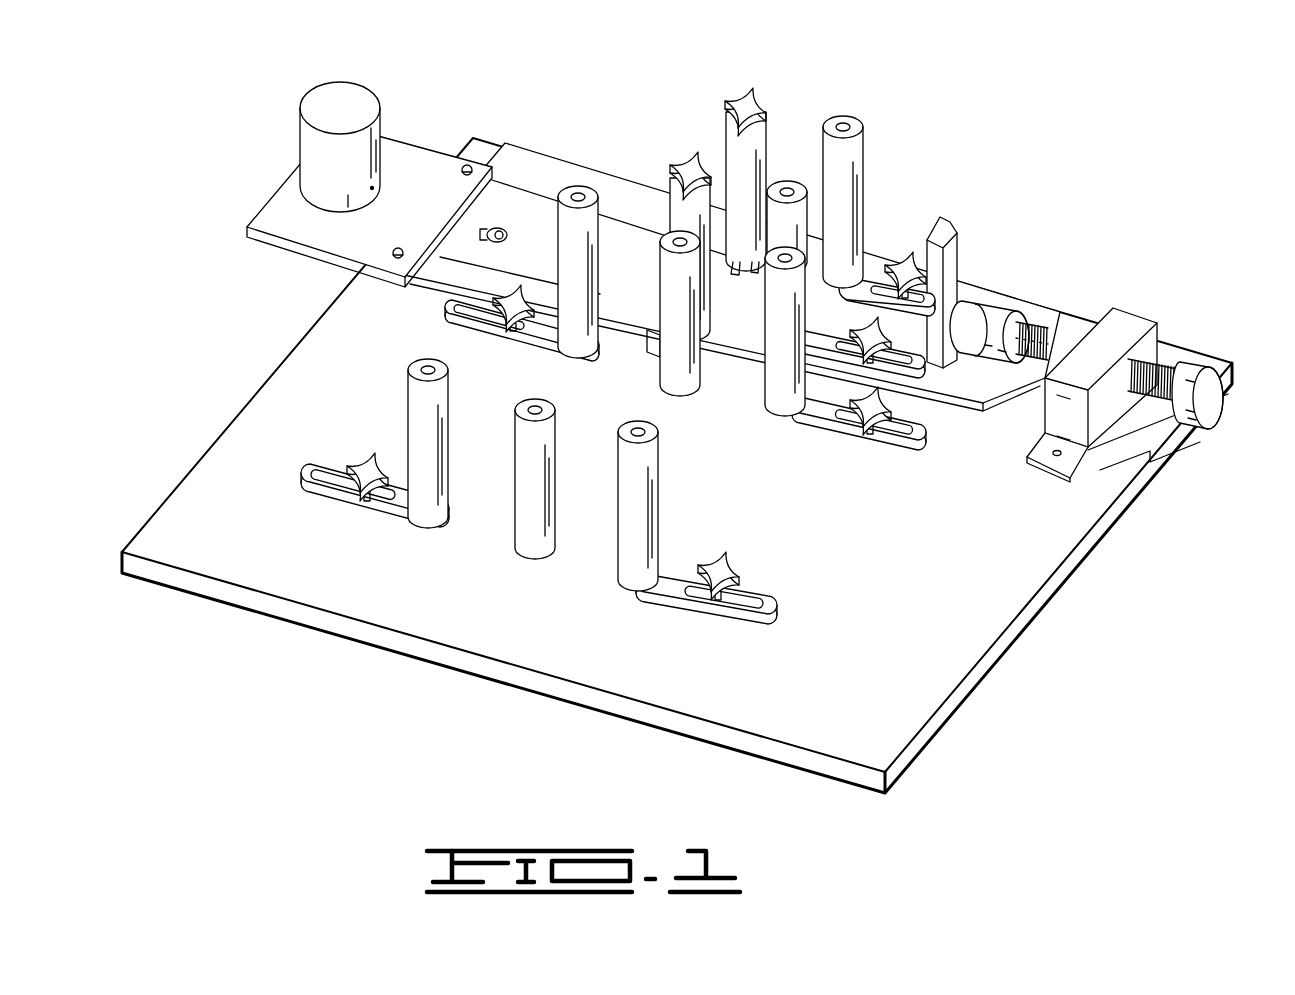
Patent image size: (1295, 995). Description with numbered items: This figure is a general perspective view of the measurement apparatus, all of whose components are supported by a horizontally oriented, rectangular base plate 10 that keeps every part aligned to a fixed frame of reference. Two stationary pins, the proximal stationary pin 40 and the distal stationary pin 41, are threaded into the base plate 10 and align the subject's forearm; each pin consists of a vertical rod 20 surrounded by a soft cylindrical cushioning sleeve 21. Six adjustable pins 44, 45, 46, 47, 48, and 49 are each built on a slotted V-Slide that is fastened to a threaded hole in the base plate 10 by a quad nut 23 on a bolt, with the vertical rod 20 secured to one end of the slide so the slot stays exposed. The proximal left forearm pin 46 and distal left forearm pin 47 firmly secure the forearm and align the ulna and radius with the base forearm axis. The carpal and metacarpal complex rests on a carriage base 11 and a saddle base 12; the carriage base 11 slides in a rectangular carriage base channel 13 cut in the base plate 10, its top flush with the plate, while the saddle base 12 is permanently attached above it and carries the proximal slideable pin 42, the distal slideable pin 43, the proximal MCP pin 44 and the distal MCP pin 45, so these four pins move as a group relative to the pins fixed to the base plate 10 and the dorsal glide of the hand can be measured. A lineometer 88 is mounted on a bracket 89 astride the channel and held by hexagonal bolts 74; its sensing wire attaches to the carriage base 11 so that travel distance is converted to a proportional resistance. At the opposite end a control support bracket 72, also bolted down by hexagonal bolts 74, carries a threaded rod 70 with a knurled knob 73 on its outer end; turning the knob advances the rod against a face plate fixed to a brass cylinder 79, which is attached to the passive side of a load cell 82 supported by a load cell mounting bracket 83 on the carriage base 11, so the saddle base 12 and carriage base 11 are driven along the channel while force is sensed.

The base plate 10 is at (522, 165).
The carriage base 11 is at (507, 257).
The saddle base 12 is at (845, 313).
The carriage base channel 13 is at (1152, 443).
The vertical rod 20 is at (533, 406).
The cushioning sleeve 21 is at (492, 470).
The quad nut 23 is at (367, 466).
The proximal stationary pin 40 is at (500, 525).
The distal stationary pin 41 is at (643, 379).
The proximal slideable pin 42 is at (659, 201).
The distal slideable pin 43 is at (717, 139).
The proximal MCP pin 44 is at (788, 162).
The distal MCP pin 45 is at (865, 99).
The proximal left forearm pin 46 is at (676, 461).
The distal left forearm pin 47 is at (748, 359).
The adjustable pin 48 is at (404, 375).
The adjustable pin 49 is at (578, 176).
The threaded rod 70 is at (1050, 327).
The control support bracket 72 is at (1130, 322).
The knurled knob 73 is at (1200, 368).
The hexagonal bolts 74 is at (1047, 458).
The brass cylinder 79 is at (1004, 322).
The load cell 82 is at (972, 313).
The load cell mounting bracket 83 is at (956, 253).
The lineometer 88 is at (334, 90).
The bracket 89 is at (413, 160).